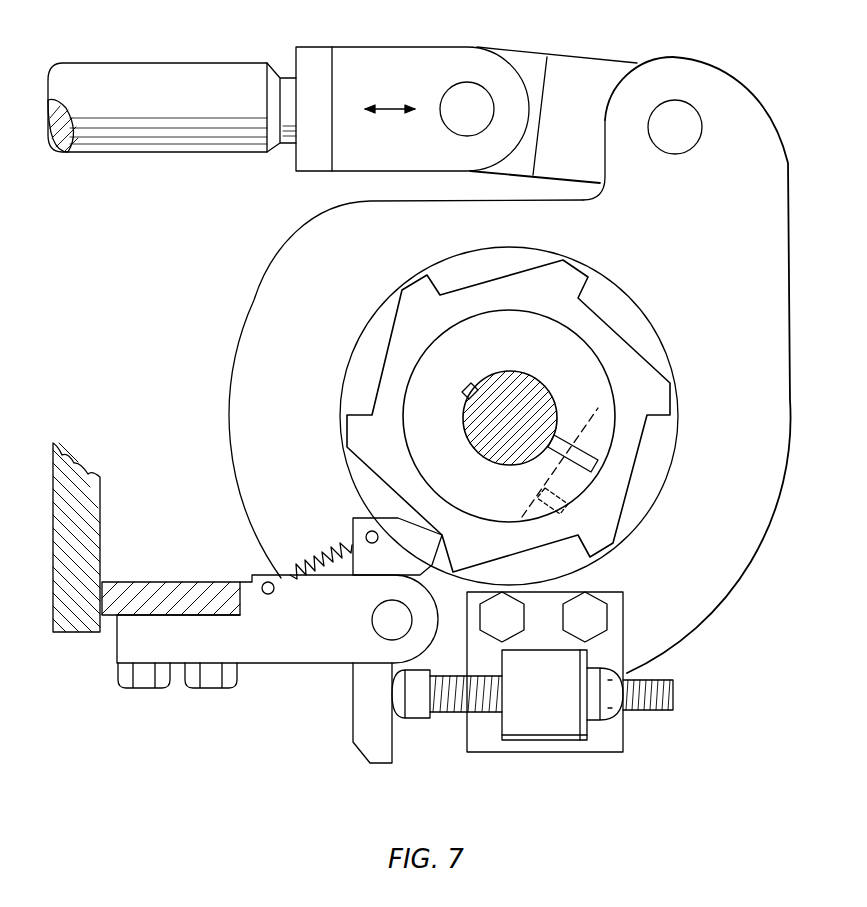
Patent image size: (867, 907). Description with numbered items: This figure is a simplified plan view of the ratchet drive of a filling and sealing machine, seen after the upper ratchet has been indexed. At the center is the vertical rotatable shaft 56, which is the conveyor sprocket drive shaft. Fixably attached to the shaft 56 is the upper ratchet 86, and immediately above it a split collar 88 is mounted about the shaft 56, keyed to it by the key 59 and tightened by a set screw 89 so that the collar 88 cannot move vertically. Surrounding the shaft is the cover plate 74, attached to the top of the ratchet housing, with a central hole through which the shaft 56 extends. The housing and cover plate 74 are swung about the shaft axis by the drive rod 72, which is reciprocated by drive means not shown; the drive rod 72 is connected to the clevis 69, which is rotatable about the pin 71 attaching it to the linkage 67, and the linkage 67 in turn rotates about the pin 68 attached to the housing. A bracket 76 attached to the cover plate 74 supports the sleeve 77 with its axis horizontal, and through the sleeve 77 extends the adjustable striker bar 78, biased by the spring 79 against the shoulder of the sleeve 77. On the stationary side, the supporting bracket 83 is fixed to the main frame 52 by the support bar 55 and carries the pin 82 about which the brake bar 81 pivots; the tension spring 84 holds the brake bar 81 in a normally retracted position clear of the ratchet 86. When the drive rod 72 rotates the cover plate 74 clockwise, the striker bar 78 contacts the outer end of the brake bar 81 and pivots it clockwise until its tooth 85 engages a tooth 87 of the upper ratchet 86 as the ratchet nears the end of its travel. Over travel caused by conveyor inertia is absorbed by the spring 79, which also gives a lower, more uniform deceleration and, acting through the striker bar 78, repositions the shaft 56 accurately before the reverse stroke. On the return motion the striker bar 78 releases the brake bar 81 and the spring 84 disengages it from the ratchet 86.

The main frame 52 is at (102, 506).
The bracket 55 is at (229, 581).
The rotatable shaft 56 is at (517, 372).
The key 59 is at (465, 388).
The linkage 67 is at (586, 57).
The pin 68 is at (702, 127).
The clevis 69 is at (371, 47).
The pin 71 is at (466, 82).
The drive rod 72 is at (135, 152).
The cover plate 74 is at (791, 378).
The bracket 76 is at (625, 603).
The sleeve 77 is at (548, 740).
The adjustable striker bar 78 is at (418, 718).
The spring 79 is at (458, 715).
The brake bar 81 is at (352, 740).
The pin 82 is at (372, 622).
The supporting bracket 83 is at (297, 665).
The tension spring 84 is at (320, 560).
The tooth 85 is at (425, 574).
The upper ratchet 86 is at (379, 392).
The tooth 87 is at (429, 278).
The split collar 88 is at (518, 310).
The set screw 89 is at (584, 480).